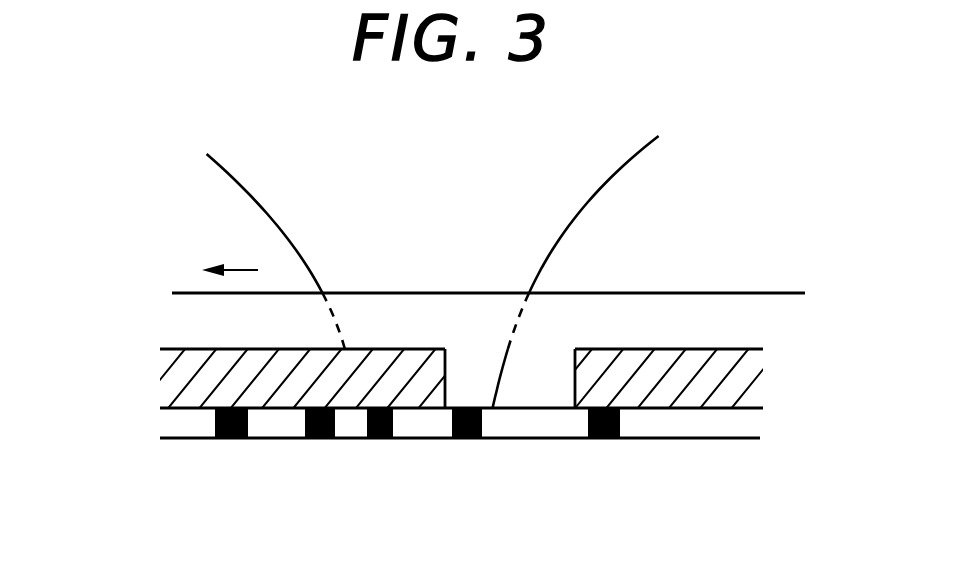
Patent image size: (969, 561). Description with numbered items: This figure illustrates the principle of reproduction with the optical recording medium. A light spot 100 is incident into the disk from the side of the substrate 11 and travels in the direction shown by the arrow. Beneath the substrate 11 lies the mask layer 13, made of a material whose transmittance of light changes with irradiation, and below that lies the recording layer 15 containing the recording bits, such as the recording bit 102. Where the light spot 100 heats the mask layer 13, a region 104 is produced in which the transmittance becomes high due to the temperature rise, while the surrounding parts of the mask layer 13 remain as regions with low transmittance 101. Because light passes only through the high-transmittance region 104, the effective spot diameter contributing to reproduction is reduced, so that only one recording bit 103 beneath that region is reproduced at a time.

The substrate 11 is at (197, 330).
The mask layer 13 is at (753, 388).
The recording layer 15 is at (740, 422).
The light spot 100 is at (583, 187).
The regions with low transmittance 101 is at (167, 383).
The recording bit 102 is at (228, 438).
The reproduced recording bit 103 is at (463, 438).
The region where transmittance becomes high due to temperature rise 104 is at (533, 388).